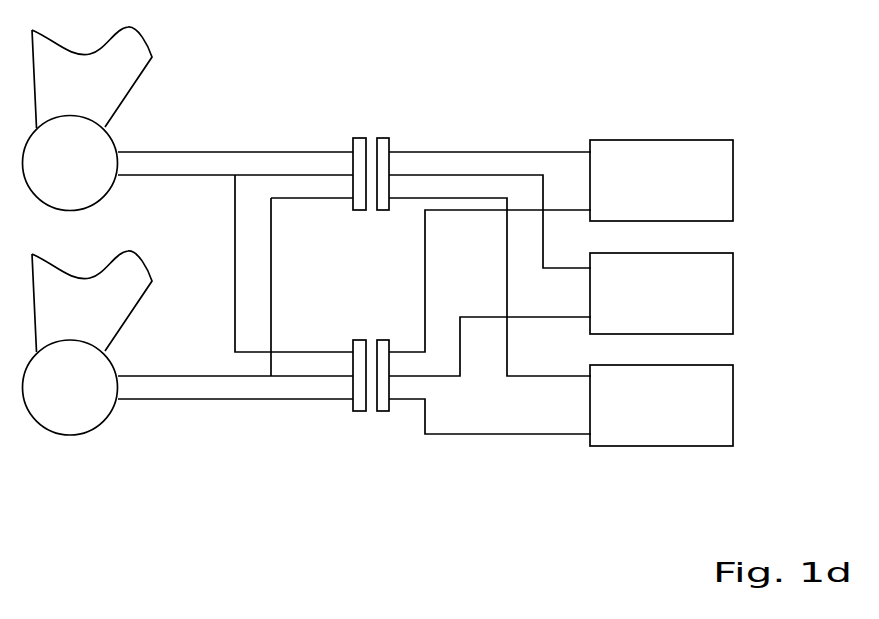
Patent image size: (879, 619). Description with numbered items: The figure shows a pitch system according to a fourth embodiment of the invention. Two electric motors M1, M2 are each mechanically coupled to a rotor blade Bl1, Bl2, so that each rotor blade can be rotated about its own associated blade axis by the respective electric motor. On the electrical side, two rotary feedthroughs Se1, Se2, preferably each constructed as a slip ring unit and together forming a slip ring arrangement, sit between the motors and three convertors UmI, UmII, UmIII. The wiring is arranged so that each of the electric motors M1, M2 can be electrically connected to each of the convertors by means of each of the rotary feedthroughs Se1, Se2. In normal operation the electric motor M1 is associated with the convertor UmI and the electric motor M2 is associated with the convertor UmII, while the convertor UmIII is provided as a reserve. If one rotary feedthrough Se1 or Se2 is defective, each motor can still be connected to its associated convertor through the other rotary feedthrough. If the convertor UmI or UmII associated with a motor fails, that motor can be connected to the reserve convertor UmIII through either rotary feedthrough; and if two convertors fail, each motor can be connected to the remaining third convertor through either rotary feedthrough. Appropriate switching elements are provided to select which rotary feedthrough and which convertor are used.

The electric motor M1 is at (70, 163).
The electric motor M2 is at (70, 387).
The rotor blade Bl1 is at (92, 77).
The rotor blade Bl2 is at (92, 301).
The rotary feedthrough Se1 is at (374, 157).
The rotary feedthrough Se2 is at (374, 392).
The convertor UmI is at (661, 180).
The convertor UmII is at (661, 293).
The convertor UmIII is at (661, 405).